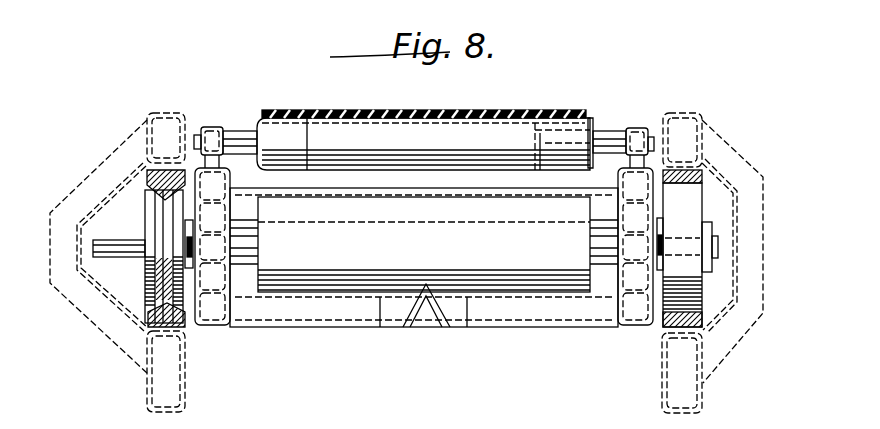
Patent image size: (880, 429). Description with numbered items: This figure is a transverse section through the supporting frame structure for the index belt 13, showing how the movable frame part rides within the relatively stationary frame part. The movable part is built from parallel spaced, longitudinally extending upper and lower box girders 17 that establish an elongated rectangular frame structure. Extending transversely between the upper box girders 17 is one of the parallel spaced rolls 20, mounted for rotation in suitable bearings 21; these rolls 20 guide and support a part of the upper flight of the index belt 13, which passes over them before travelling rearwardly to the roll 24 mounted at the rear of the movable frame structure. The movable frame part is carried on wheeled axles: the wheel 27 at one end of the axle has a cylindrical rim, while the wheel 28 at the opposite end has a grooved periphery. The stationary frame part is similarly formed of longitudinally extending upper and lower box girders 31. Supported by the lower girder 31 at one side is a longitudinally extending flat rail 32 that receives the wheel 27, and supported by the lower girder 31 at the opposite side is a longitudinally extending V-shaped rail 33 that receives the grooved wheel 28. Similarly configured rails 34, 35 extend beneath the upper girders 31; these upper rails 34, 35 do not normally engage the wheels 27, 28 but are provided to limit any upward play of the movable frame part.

The index belt 13 is at (304, 108).
The box girders 17 is at (214, 178).
The rolls 20 is at (414, 131).
The bearings 21 is at (213, 126).
The roll 24 is at (428, 255).
The wheels 27 is at (697, 291).
The wheels 28 is at (150, 208).
The box girders 31 is at (180, 95).
The flat rail 32 is at (667, 327).
The V-shaped rail 33 is at (150, 326).
The rail 34 is at (702, 178).
The rail 35 is at (147, 167).